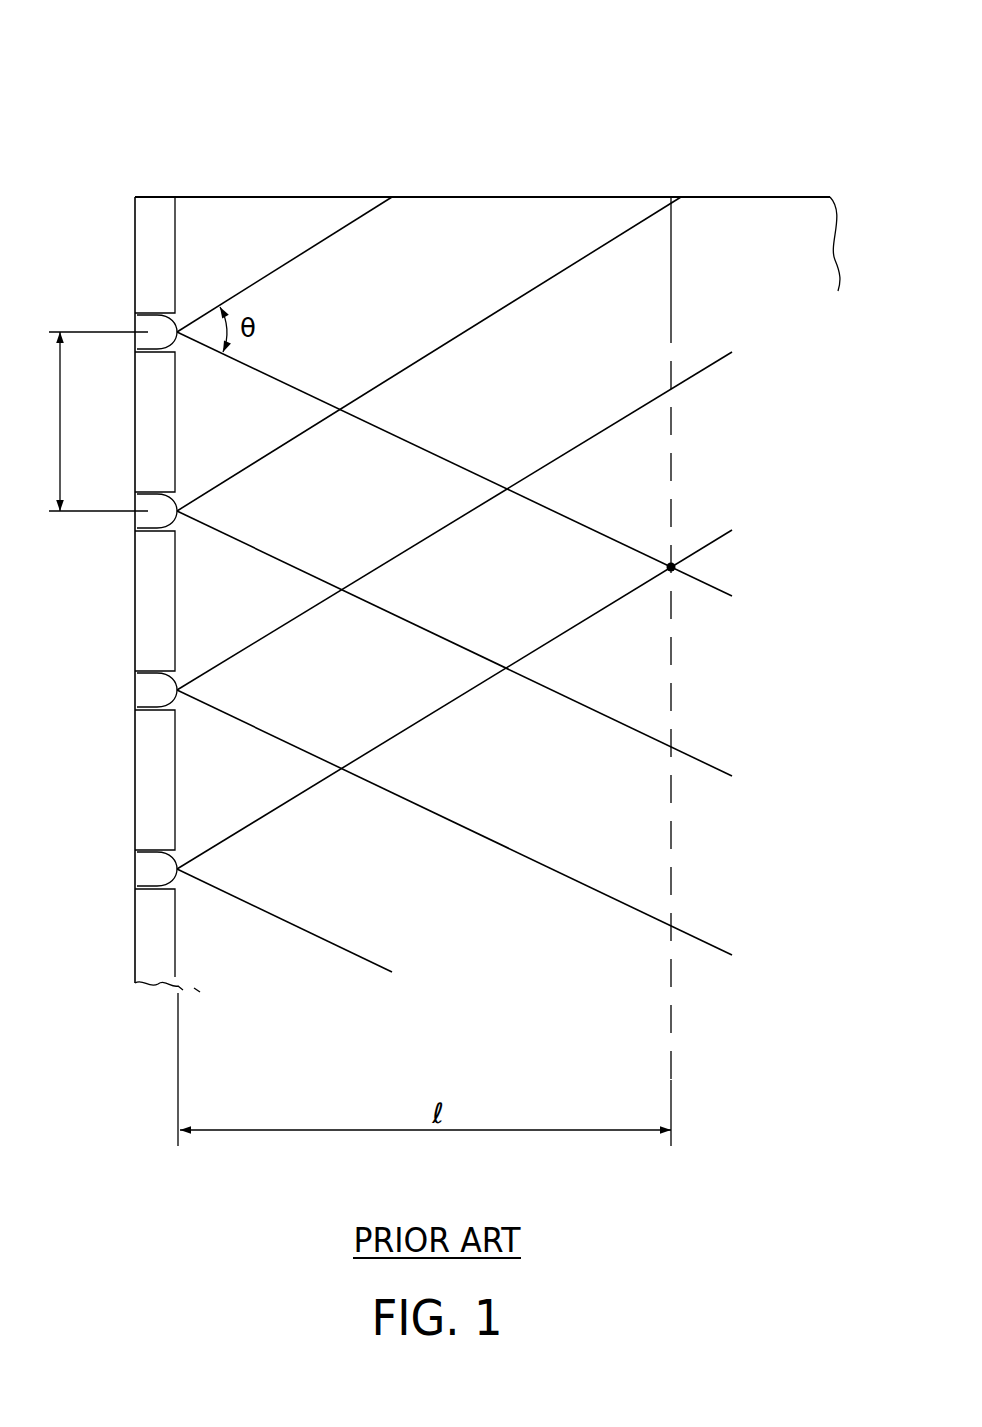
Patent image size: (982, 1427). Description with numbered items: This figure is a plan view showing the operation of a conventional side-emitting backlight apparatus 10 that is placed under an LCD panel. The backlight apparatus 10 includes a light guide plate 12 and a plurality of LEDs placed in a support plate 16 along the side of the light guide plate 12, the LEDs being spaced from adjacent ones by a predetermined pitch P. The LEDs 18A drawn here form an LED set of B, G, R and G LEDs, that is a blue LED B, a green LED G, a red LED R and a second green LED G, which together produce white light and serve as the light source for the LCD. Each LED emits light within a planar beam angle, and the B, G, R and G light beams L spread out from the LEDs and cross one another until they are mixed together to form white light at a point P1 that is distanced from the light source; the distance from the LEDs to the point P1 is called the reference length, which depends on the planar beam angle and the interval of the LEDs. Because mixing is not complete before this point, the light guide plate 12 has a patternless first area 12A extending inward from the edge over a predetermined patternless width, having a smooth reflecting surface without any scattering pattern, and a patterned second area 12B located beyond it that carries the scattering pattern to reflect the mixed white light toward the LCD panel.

The side-emitting backlight apparatus 10 is at (358, 21).
The light guide plate 12 is at (690, 124).
The patternless first area 12A is at (471, 241).
The patterned second area 12B is at (765, 241).
The support plate 16 is at (147, 945).
The light emitting elements 18A is at (110, 257).
The blue LED B is at (148, 322).
The green LED G is at (148, 520).
The red LED R is at (144, 688).
The pitch P is at (90, 421).
The light beams L is at (253, 825).
The mixing point P1 is at (680, 566).